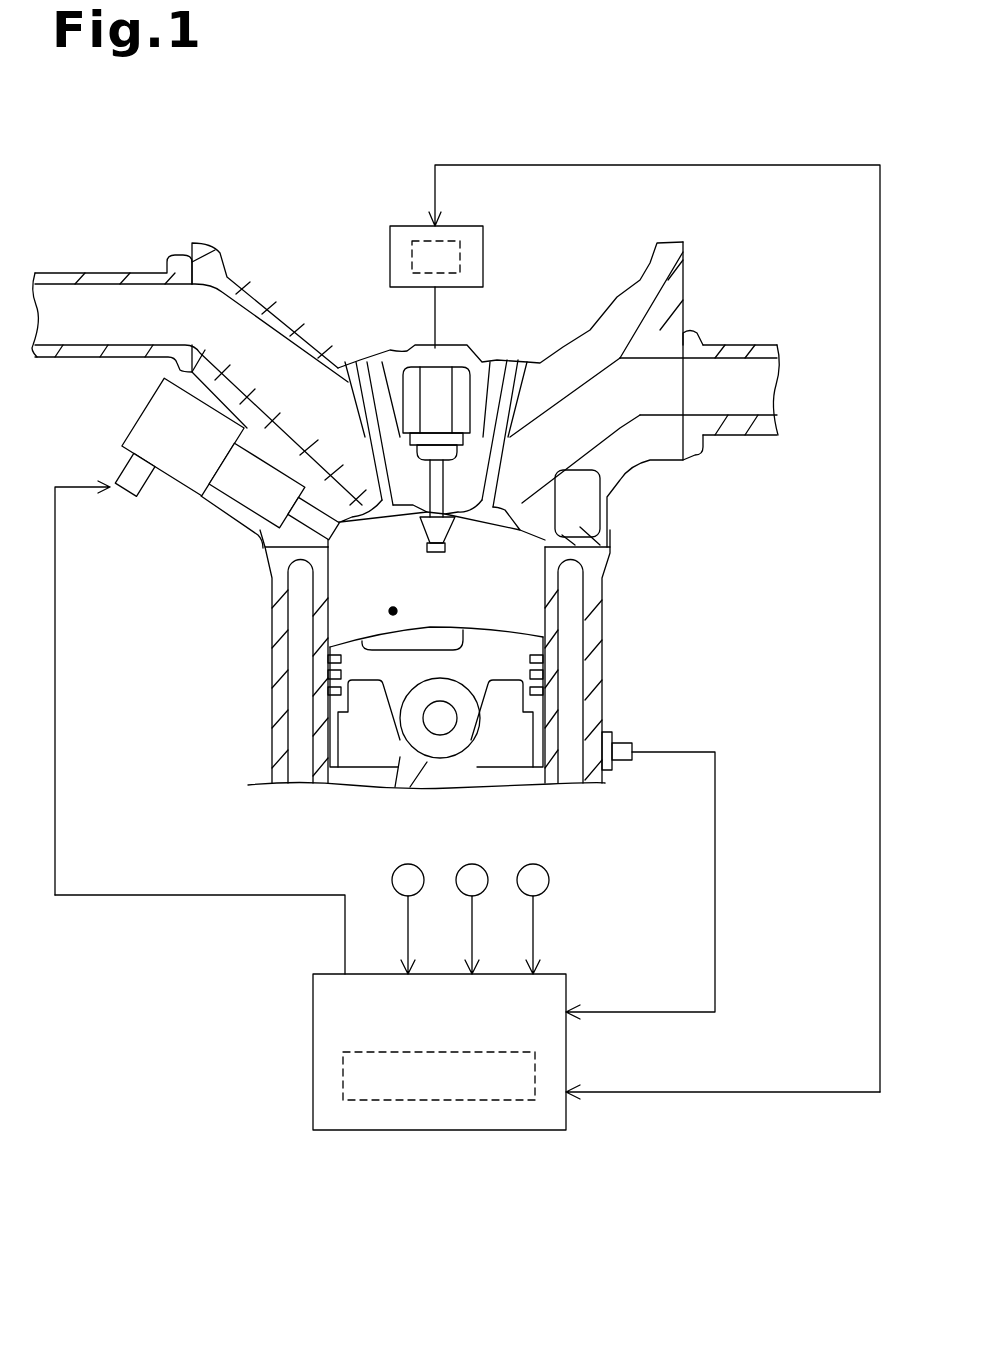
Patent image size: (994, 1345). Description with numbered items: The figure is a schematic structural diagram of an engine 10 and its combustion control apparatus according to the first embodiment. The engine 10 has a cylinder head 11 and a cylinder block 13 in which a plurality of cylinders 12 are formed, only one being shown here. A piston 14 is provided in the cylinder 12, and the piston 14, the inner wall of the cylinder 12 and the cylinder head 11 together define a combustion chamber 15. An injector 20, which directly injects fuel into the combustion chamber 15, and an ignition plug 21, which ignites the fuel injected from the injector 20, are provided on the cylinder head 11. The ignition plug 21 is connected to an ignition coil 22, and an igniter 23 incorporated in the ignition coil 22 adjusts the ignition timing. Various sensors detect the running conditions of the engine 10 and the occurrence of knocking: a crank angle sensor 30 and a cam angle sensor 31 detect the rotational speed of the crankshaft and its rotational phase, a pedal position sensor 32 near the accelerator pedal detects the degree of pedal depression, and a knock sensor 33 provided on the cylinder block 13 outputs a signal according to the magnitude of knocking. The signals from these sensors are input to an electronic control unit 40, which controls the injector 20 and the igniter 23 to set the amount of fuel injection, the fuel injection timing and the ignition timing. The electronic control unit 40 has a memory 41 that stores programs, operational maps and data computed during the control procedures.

The engine 10 is at (685, 586).
The cylinder head 11 is at (625, 467).
The cylinder 12 is at (530, 790).
The cylinder block 13 is at (602, 658).
The piston 14 is at (503, 745).
The combustion chamber 15 is at (393, 611).
The injector 20 is at (187, 468).
The ignition plug 21 is at (447, 548).
The ignition coil 22 is at (465, 225).
The igniter 23 is at (460, 257).
The crank angle sensor 30 is at (392, 876).
The cam angle sensor 31 is at (470, 863).
The pedal position sensor 32 is at (550, 880).
The knock sensor 33 is at (625, 740).
The electronic control unit 40 is at (360, 1130).
The memory 41 is at (441, 1052).